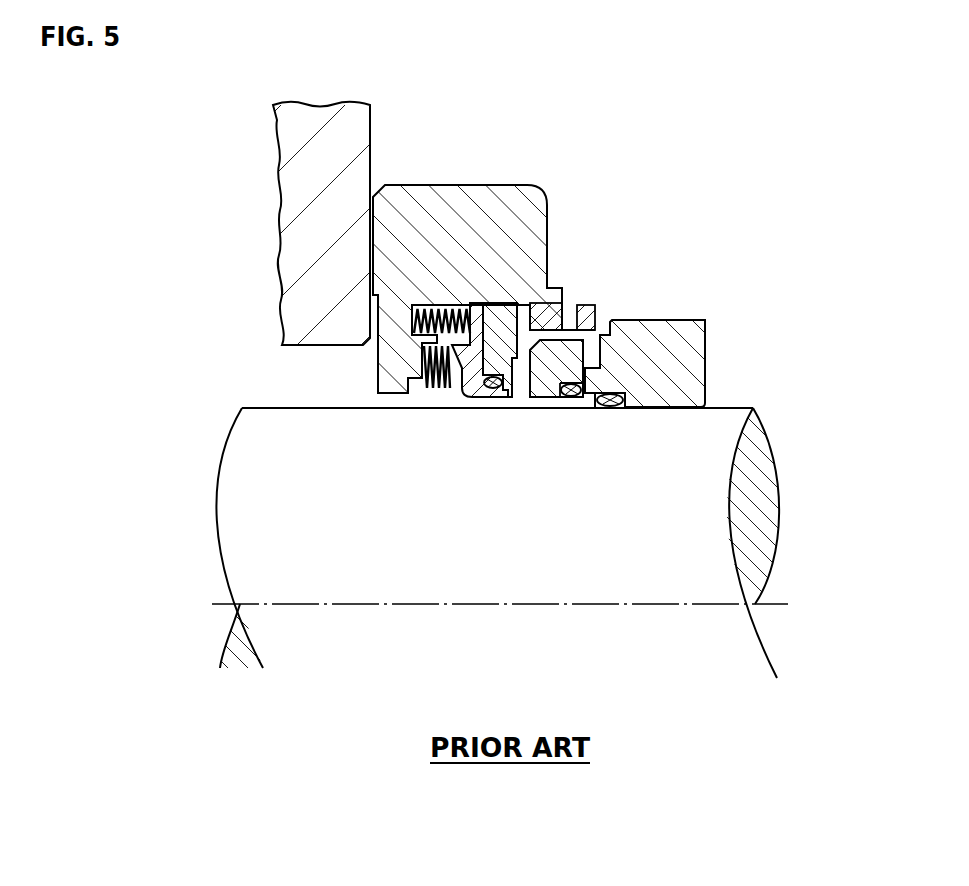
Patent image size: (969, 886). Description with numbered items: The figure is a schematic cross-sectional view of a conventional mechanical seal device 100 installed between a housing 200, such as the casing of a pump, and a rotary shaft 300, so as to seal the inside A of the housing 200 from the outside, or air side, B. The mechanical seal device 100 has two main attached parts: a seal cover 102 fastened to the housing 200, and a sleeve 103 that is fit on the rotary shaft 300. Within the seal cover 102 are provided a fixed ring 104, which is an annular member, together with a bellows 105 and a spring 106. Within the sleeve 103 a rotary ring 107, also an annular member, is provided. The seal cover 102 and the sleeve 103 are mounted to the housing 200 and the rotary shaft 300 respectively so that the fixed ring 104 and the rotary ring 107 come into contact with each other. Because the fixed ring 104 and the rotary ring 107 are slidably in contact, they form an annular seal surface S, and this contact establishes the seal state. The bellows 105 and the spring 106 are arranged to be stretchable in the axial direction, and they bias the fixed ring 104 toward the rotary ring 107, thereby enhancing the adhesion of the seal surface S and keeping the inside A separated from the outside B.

The mechanical seal device 100 is at (722, 213).
The seal cover 102 is at (482, 190).
The sleeve 103 is at (668, 332).
The fixed ring 104 is at (490, 388).
The bellows 105 is at (432, 393).
The spring 106 is at (415, 322).
The rotary ring 107 is at (560, 350).
The housing 200 is at (362, 162).
The rotary shaft 300 is at (703, 478).
The seal surface S is at (522, 377).
The inside of the housing A is at (181, 381).
The outside (air side) B is at (787, 298).